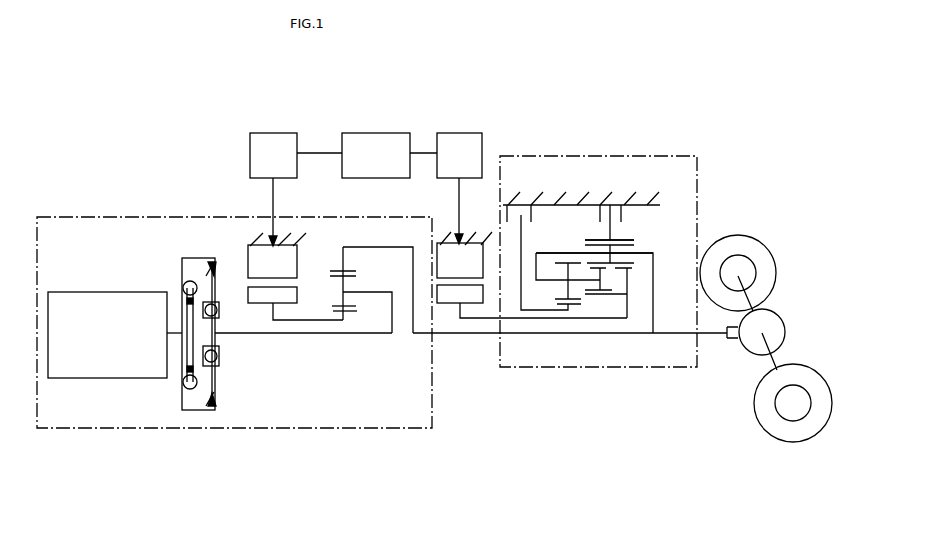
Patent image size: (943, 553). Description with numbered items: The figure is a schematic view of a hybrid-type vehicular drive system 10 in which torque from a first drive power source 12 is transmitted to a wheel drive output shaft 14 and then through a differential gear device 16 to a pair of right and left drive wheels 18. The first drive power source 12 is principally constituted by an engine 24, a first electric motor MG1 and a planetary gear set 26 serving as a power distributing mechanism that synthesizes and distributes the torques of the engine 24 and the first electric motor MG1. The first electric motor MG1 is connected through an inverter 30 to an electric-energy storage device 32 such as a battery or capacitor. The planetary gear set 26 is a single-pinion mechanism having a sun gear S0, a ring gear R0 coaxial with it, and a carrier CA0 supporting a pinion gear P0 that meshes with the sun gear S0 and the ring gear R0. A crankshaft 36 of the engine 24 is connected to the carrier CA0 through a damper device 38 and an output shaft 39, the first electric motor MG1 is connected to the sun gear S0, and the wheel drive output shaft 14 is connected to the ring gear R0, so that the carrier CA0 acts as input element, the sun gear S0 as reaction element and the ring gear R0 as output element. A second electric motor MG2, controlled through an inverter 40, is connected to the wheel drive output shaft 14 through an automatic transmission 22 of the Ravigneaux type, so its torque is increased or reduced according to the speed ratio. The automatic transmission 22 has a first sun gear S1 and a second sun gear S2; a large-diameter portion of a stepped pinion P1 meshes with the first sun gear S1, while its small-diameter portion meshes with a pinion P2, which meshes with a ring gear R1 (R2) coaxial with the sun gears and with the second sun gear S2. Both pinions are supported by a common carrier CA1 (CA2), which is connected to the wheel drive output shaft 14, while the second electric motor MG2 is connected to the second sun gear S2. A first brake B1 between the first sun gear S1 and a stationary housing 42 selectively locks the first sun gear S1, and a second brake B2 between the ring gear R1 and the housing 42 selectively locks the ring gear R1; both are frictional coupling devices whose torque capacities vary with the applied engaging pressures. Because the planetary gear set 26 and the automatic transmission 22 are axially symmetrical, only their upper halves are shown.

The vehicular drive system 10 is at (634, 90).
The first drive power source 12 is at (367, 428).
The wheel drive output shaft 14 is at (714, 336).
The differential gear device 16 is at (772, 325).
The drive wheels 18 is at (768, 262).
The automatic transmission 22 is at (698, 178).
The engine 24 is at (105, 303).
The planetary gear set 26 is at (353, 315).
The inverter 30 is at (290, 137).
The electric-energy storage device 32 is at (366, 137).
The crankshaft 36 is at (177, 336).
The damper device 38 is at (196, 251).
The output shaft 39 is at (253, 335).
The inverter 40 is at (466, 137).
The housing 42 is at (578, 205).
The first brake B1 is at (515, 220).
The second brake B2 is at (618, 220).
The first electric motor MG1 is at (295, 276).
The second electric motor MG2 is at (532, 275).
The ring gear R0 is at (340, 268).
The pinion gear P0 is at (340, 306).
The sun gear S0 is at (350, 313).
The carrier CA0 is at (358, 292).
The first sun gear S1 is at (558, 306).
The stepped pinion P1 is at (610, 292).
The carrier CA1 is at (534, 258).
The carrier CA2 is at (594, 235).
The ring gear R1 is at (622, 240).
The ring gear R2 is at (626, 227).
The pinion P2 is at (628, 268).
The second sun gear S2 is at (627, 270).